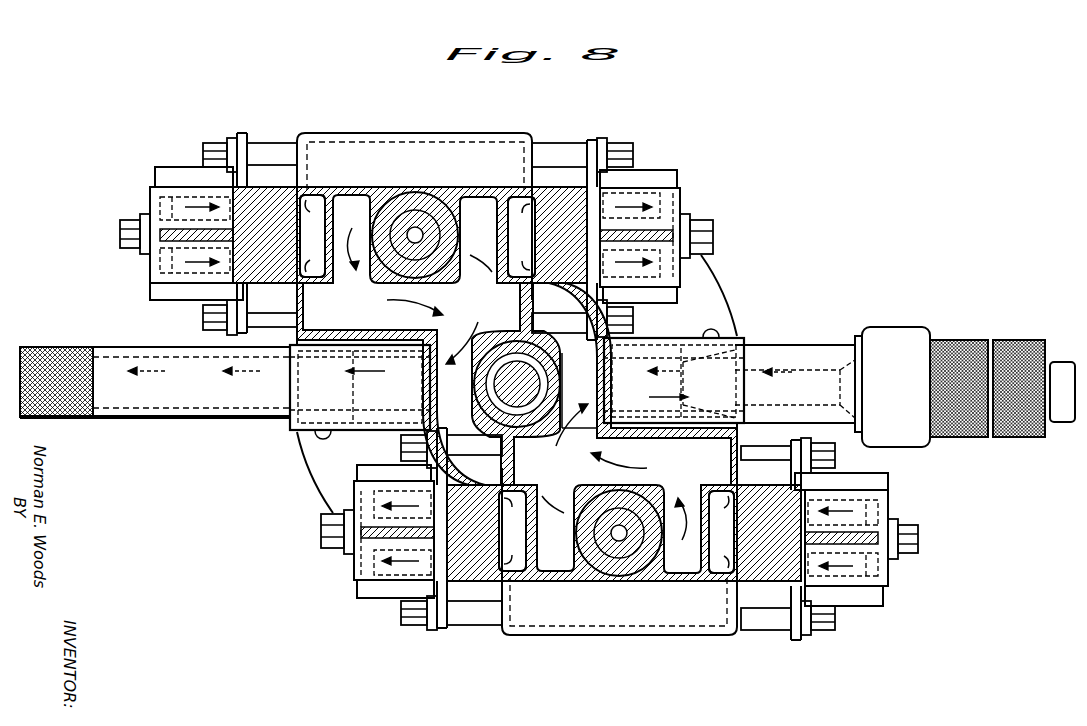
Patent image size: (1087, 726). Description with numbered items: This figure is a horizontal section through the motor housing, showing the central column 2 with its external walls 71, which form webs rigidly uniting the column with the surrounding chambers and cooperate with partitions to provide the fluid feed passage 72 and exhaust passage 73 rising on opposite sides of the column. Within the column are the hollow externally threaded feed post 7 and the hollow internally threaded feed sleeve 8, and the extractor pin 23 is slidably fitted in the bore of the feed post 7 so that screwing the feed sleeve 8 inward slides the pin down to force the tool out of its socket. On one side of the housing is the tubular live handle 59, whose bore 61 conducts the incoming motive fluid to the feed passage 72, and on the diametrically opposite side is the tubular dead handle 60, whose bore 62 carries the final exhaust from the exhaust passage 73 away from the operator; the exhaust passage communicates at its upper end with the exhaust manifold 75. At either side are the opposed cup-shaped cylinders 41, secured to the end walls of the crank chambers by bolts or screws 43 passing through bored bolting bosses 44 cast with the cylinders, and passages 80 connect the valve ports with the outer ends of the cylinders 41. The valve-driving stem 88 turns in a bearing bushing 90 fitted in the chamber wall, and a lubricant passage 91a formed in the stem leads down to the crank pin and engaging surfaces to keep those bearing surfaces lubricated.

The central column 2 is at (492, 332).
The feed post 7 is at (459, 308).
The feed sleeve 8 is at (579, 414).
The extractor pin 23 is at (562, 362).
The cup-shaped cylinders 41 is at (150, 294).
The bolts or screws 43 is at (210, 156).
The bolting bosses 44 is at (155, 195).
The live handle 59 is at (818, 351).
The dead handle 60 is at (165, 418).
The bore of live handle 61 is at (750, 355).
The bore of dead handle 62 is at (112, 353).
The external walls 71 is at (415, 401).
The fluid feed passage 72 is at (579, 390).
The fluid exhaust passage 73 is at (454, 376).
The exhaust manifold 75 is at (603, 452).
The passages 80 is at (330, 195).
The stem 88 is at (455, 258).
The bearing bushing 90 is at (463, 218).
The lubricant passage 91a is at (422, 230).